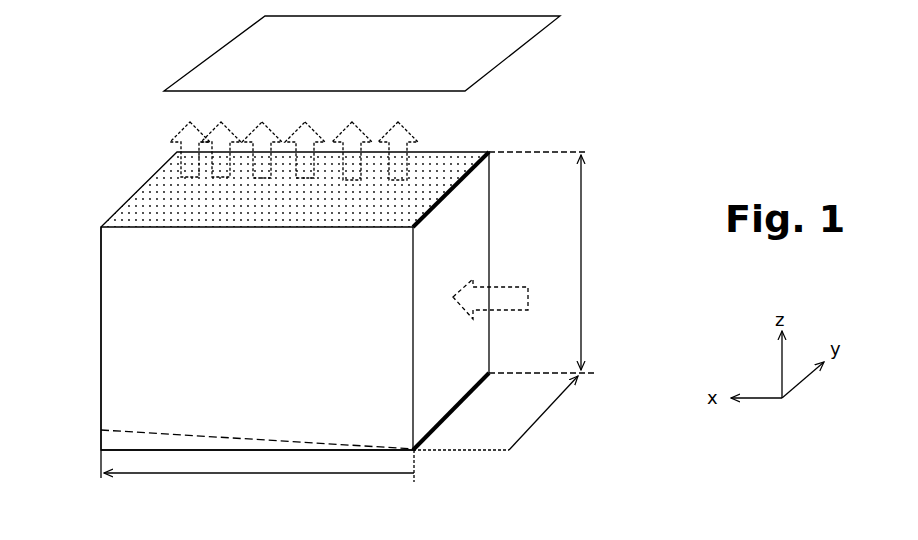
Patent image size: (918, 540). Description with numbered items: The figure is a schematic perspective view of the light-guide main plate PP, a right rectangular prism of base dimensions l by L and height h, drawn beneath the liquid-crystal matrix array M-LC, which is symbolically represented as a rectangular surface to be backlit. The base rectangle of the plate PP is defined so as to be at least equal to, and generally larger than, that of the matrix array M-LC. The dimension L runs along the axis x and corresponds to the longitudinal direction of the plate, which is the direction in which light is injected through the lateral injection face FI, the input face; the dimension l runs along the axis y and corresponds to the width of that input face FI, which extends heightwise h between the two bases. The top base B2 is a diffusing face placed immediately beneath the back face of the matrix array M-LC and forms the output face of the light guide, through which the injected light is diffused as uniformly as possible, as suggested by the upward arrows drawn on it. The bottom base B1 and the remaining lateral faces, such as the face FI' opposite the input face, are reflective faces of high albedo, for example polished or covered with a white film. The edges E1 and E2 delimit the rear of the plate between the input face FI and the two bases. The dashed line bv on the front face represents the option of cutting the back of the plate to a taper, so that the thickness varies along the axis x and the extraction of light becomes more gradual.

The liquid-crystal matrix array M-LC is at (362, 53).
The main plate PP is at (122, 190).
The top base B2 is at (294, 165).
The upper rear edge of the box E2 is at (445, 190).
The lower rear edge of the box E1 is at (450, 412).
The lateral injection face FI is at (501, 255).
The left front face of the box FI' is at (65, 338).
The dashed cutting line bv is at (168, 433).
The bottom base B1 is at (290, 456).
The dimension L is at (257, 477).
The height h is at (592, 262).
The dimension I l is at (543, 413).